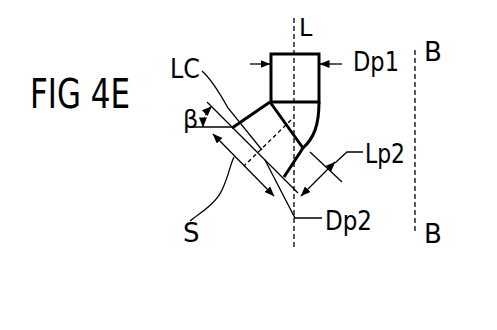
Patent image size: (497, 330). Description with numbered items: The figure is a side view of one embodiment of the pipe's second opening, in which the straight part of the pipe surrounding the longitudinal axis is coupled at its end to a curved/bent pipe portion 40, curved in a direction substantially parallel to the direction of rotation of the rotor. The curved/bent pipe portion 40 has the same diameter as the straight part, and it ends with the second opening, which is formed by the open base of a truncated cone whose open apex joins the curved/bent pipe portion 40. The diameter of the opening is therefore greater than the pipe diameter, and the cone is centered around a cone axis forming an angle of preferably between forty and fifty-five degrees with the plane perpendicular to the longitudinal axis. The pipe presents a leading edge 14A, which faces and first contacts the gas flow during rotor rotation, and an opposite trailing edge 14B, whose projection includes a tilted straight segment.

The trailing edge 14B is at (252, 64).
The leading edge 14A is at (320, 102).
The curved/bent pipe portion 40 is at (300, 122).